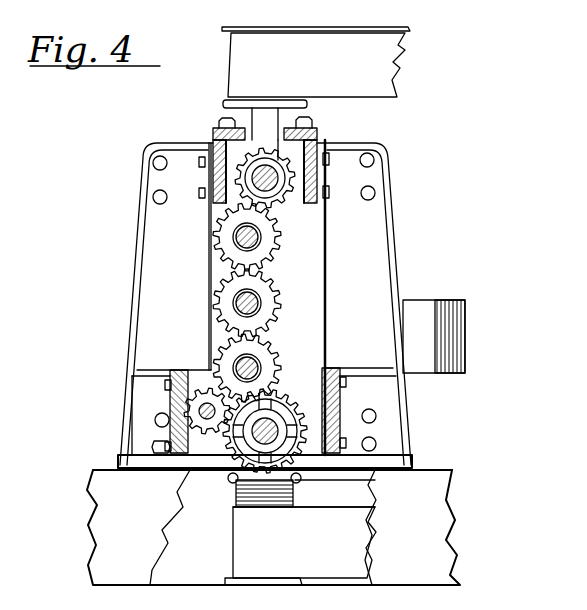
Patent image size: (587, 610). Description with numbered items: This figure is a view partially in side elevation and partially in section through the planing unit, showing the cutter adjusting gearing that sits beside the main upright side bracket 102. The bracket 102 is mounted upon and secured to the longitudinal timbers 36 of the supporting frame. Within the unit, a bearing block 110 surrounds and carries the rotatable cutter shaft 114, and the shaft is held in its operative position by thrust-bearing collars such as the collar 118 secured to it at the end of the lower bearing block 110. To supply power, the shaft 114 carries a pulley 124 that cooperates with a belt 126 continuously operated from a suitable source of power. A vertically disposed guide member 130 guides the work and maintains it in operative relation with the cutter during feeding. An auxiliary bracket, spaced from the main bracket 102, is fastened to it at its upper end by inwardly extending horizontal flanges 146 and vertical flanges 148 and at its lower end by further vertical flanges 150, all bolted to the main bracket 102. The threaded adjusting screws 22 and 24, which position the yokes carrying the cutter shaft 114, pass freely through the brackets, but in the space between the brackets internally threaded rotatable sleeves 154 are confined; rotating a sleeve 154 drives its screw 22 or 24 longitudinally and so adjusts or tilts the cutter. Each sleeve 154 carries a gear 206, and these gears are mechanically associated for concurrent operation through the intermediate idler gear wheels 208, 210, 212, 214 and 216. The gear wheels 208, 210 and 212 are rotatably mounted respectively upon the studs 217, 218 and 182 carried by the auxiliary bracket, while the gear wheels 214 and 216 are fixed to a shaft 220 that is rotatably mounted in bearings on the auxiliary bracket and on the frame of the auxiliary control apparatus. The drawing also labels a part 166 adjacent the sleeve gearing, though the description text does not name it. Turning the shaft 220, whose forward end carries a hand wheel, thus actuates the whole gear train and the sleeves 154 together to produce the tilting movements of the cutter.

The feed screw 22 is at (262, 186).
The feed screw 24 is at (280, 430).
The longitudinal timber 36 is at (436, 541).
The upright side bracket 102 is at (143, 208).
The bearing block 110 is at (296, 481).
The cutter shaft 114 is at (259, 122).
The collar 118 is at (297, 501).
The pulley 124 is at (290, 29).
The belt 126 is at (316, 305).
The guide member 130 is at (428, 318).
The horizontal flange 146 is at (222, 126).
The vertical flange 148 is at (214, 140).
The vertical flange 150 is at (330, 371).
The rotatable sleeve 154 is at (252, 175).
The shaft 166 is at (272, 175).
The stud 182 is at (243, 364).
The gear 206 is at (282, 197).
The idler gear wheel 208 is at (283, 242).
The idler gear wheel 210 is at (282, 298).
The idler gear wheel 212 is at (281, 358).
The idler gear wheel 214 is at (210, 390).
The idler gear wheel 216 is at (203, 392).
The stud 217 is at (236, 238).
The stud 218 is at (238, 302).
The shaft 220 is at (184, 410).